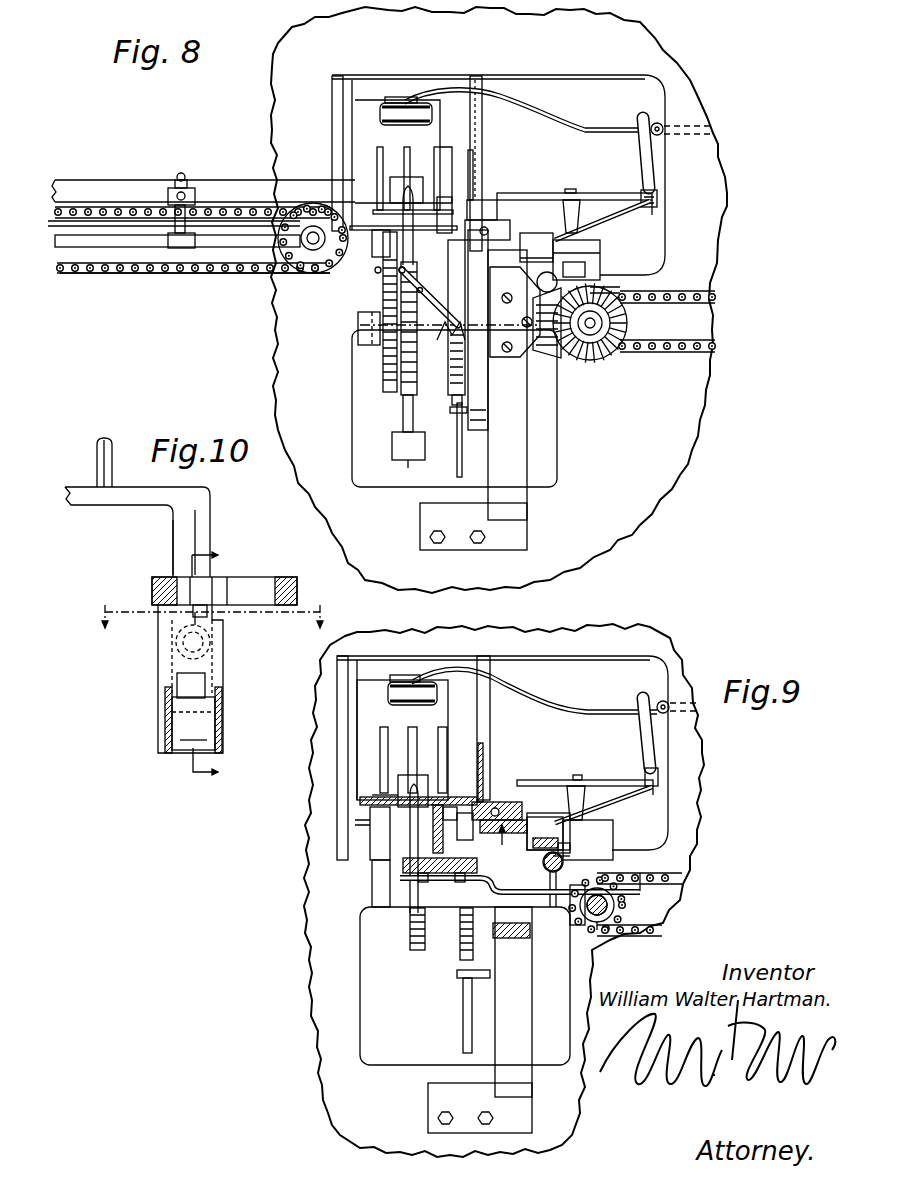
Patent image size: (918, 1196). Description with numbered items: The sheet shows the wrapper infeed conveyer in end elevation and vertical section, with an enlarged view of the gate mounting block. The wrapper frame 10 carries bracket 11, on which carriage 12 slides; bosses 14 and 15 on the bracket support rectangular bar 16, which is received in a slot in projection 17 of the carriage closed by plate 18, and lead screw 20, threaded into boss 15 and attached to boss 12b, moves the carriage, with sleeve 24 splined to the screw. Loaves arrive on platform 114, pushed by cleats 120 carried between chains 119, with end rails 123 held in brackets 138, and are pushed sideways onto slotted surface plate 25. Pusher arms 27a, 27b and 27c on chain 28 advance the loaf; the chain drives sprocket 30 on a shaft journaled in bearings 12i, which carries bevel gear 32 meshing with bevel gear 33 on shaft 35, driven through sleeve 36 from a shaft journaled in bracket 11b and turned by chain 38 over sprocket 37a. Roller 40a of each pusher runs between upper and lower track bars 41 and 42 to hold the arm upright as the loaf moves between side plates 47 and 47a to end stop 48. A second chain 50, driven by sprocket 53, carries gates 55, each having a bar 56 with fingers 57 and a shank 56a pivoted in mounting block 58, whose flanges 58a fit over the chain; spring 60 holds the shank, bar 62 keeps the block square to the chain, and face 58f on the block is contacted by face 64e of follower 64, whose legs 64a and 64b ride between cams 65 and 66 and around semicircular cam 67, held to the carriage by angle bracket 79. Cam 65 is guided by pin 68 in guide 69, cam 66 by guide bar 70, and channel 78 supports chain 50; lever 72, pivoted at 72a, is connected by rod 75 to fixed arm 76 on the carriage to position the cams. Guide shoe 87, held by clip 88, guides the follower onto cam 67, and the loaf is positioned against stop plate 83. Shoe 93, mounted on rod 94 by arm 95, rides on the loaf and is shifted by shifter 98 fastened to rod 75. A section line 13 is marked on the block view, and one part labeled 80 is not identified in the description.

In FIG. 8, the wrapper frame 10 is at (692, 408).
In FIG. 9, the wrapper frame 10 is at (702, 742).
In FIG. 8, the bracket 11 is at (515, 497).
In FIG. 10, the bracket 11 is at (219, 664).
In FIG. 9, the bracket 11 is at (390, 900).
In FIG. 9, the bracket 11b is at (577, 926).
In FIG. 8, the carriage 12 is at (533, 340).
In FIG. 9, the carriage 12 is at (509, 851).
In FIG. 8, the boss 12b is at (621, 285).
In FIG. 8, the bearings 12i is at (362, 330).
In FIG. 9, the boss 14 is at (572, 851).
In FIG. 8, the boss 15 is at (575, 268).
In FIG. 8, the rectangular bar 16 is at (600, 270).
In FIG. 9, the rectangular bar 16 is at (570, 846).
In FIG. 8, the projection 17 is at (600, 255).
In FIG. 9, the projection 17 is at (580, 828).
In FIG. 8, the plate 18 is at (600, 245).
In FIG. 9, the plate 18 is at (565, 838).
In FIG. 9, the lead screw 20 is at (650, 872).
In FIG. 9, the sleeve 24 is at (545, 860).
In FIG. 8, the slotted surface plate 25 is at (365, 212).
In FIG. 9, the slotted surface plate 25 is at (365, 805).
In FIG. 8, the pusher arm 27a is at (395, 190).
In FIG. 9, the pusher arm 27b is at (400, 782).
In FIG. 8, the pusher arm 27c is at (395, 445).
In FIG. 8, the chain 28 is at (410, 385).
In FIG. 9, the chain 28 is at (418, 950).
In FIG. 8, the sprocket 30 is at (392, 362).
In FIG. 8, the bevel gear 32 is at (550, 352).
In FIG. 8, the bevel gear 33 is at (590, 352).
In FIG. 8, the shaft 35 is at (595, 328).
In FIG. 9, the shaft 35 is at (612, 912).
In FIG. 9, the sleeve 36 is at (600, 930).
In FIG. 9, the sprocket 37a is at (622, 900).
In FIG. 8, the chain 38 is at (700, 300).
In FIG. 9, the chain 38 is at (685, 888).
In FIG. 8, the roller 40a is at (402, 276).
In FIG. 8, the upper track bar 41 is at (440, 330).
In FIG. 8, the lower track bar 42 is at (385, 245).
In FIG. 8, the vertical side plate 47 is at (343, 90).
In FIG. 9, the vertical side plate 47 is at (348, 712).
In FIG. 8, the vertical side plate 47a is at (478, 85).
In FIG. 9, the vertical side plate 47a is at (490, 668).
In FIG. 8, the end stop 48 is at (360, 135).
In FIG. 9, the end stop 48 is at (365, 722).
In FIG. 8, the second chain 50 is at (452, 399).
In FIG. 10, the second chain 50 is at (215, 728).
In FIG. 9, the second chain 50 is at (462, 935).
In FIG. 8, the drive sprocket 53 is at (452, 375).
In FIG. 8, the gate 55 is at (460, 442).
In FIG. 10, the gate 55 is at (105, 512).
In FIG. 9, the gate 55 is at (372, 795).
In FIG. 10, the horizontal bar 56 is at (90, 505).
In FIG. 10, the shank portion 56a is at (183, 530).
In FIG. 8, the vertical fingers 57 is at (410, 162).
In FIG. 10, the vertical fingers 57 is at (100, 450).
In FIG. 9, the vertical fingers 57 is at (385, 748).
In FIG. 10, the mounting block 58 is at (155, 663).
In FIG. 10, the depending flanges 58a is at (165, 700).
In FIG. 10, the vertical longitudinal face 58f is at (192, 618).
In FIG. 10, the spring 60 is at (215, 660).
In FIG. 10, the bar 62 is at (177, 683).
In FIG. 8, the follower 64 is at (490, 220).
In FIG. 10, the follower 64 is at (245, 577).
In FIG. 10, the follower leg 64a is at (165, 580).
In FIG. 10, the follower leg 64b is at (262, 590).
In FIG. 10, the vertical face 64e is at (215, 620).
In FIG. 9, the cam 65 is at (466, 812).
In FIG. 8, the cam 66 is at (448, 218).
In FIG. 9, the cam 66 is at (440, 800).
In FIG. 8, the semicircular cam 67 is at (482, 402).
In FIG. 9, the pin 68 is at (495, 802).
In FIG. 9, the guide 69 is at (505, 820).
In FIG. 8, the fixed guide bar 70 is at (495, 238).
In FIG. 9, the fixed guide bar 70 is at (440, 840).
In FIG. 8, the lever 72 is at (545, 195).
In FIG. 9, the lever 72 is at (553, 781).
In FIG. 8, the pivot 72a is at (570, 189).
In FIG. 9, the pivot 72a is at (578, 775).
In FIG. 8, the rod 75 is at (656, 207).
In FIG. 9, the rod 75 is at (660, 790).
In FIG. 8, the fixed arm 76 is at (610, 222).
In FIG. 9, the fixed arm 76 is at (620, 808).
In FIG. 9, the channel 78 is at (485, 894).
In FIG. 8, the angle bracket 79 is at (488, 382).
In FIG. 8, the rod 80 is at (474, 200).
In FIG. 8, the stop plate 83 is at (479, 170).
In FIG. 9, the stop plate 83 is at (482, 742).
In FIG. 8, the guide shoe 87 is at (420, 456).
In FIG. 8, the U-shaped clip 88 is at (405, 412).
In FIG. 8, the shoe 93 is at (378, 115).
In FIG. 9, the shoe 93 is at (385, 690).
In FIG. 8, the rod 94 is at (660, 136).
In FIG. 9, the rod 94 is at (667, 702).
In FIG. 8, the arm 95 is at (528, 114).
In FIG. 9, the arm 95 is at (560, 700).
In FIG. 8, the shifter 98 is at (640, 160).
In FIG. 9, the shifter 98 is at (642, 740).
In FIG. 8, the plate 114 is at (58, 240).
In FIG. 8, the chains 119 is at (95, 274).
In FIG. 8, the cleats 120 is at (150, 207).
In FIG. 8, the end rail 123 is at (90, 180).
In FIG. 8, the brackets 138 is at (190, 188).
In FIG. 10, the section line 13 is at (213, 601).